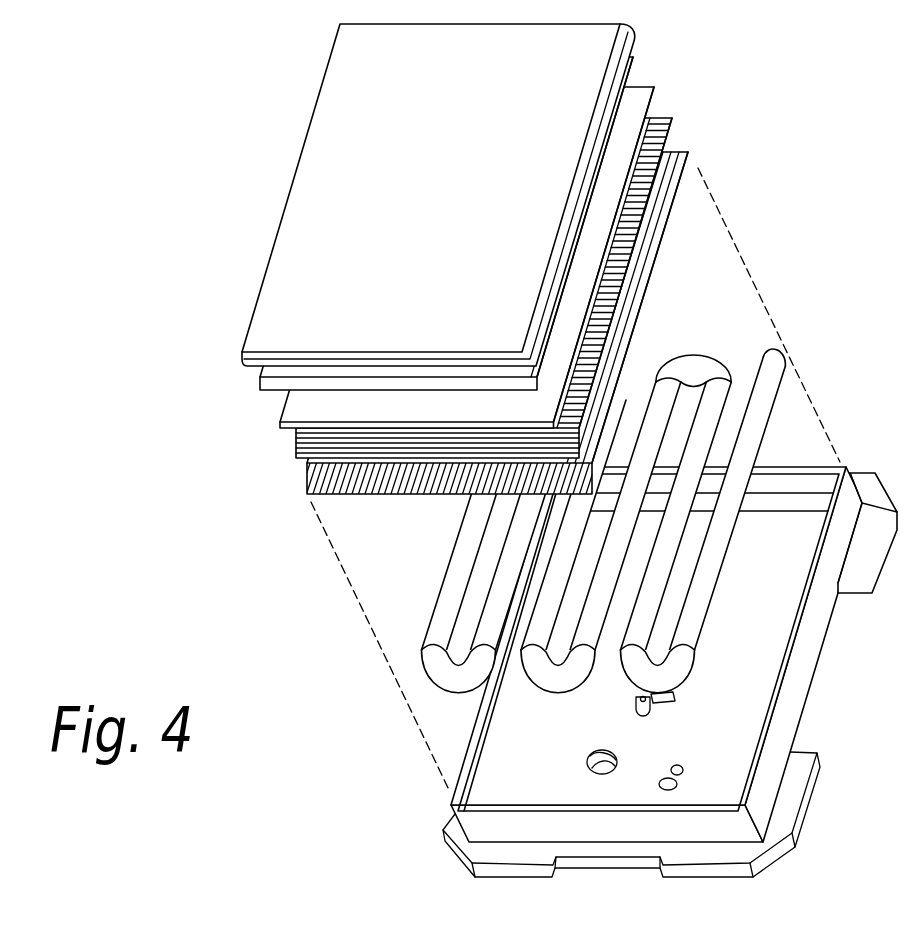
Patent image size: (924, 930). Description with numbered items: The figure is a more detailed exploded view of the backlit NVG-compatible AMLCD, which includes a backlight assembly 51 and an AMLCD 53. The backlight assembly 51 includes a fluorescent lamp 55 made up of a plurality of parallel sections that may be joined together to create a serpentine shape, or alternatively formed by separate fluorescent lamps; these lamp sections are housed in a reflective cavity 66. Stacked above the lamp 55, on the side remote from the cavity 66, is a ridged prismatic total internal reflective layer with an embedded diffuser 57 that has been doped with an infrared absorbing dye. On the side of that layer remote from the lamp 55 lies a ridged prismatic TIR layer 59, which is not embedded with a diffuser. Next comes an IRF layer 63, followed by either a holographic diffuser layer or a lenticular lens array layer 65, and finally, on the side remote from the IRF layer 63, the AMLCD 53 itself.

The backlight assembly 51 is at (497, 276).
The AMLCD 53 is at (336, 174).
The fluorescent lamp 55 is at (708, 443).
The IR dye doped ridged prismatic TIR with embedded diffuser layer 57 is at (307, 493).
The ridged prismatic TIR layer 59 is at (293, 457).
The IRF layer 63 is at (282, 420).
The holographic diffuser layer or lenticular lens array layer 65 is at (262, 383).
The reflective cavity 66 is at (814, 789).